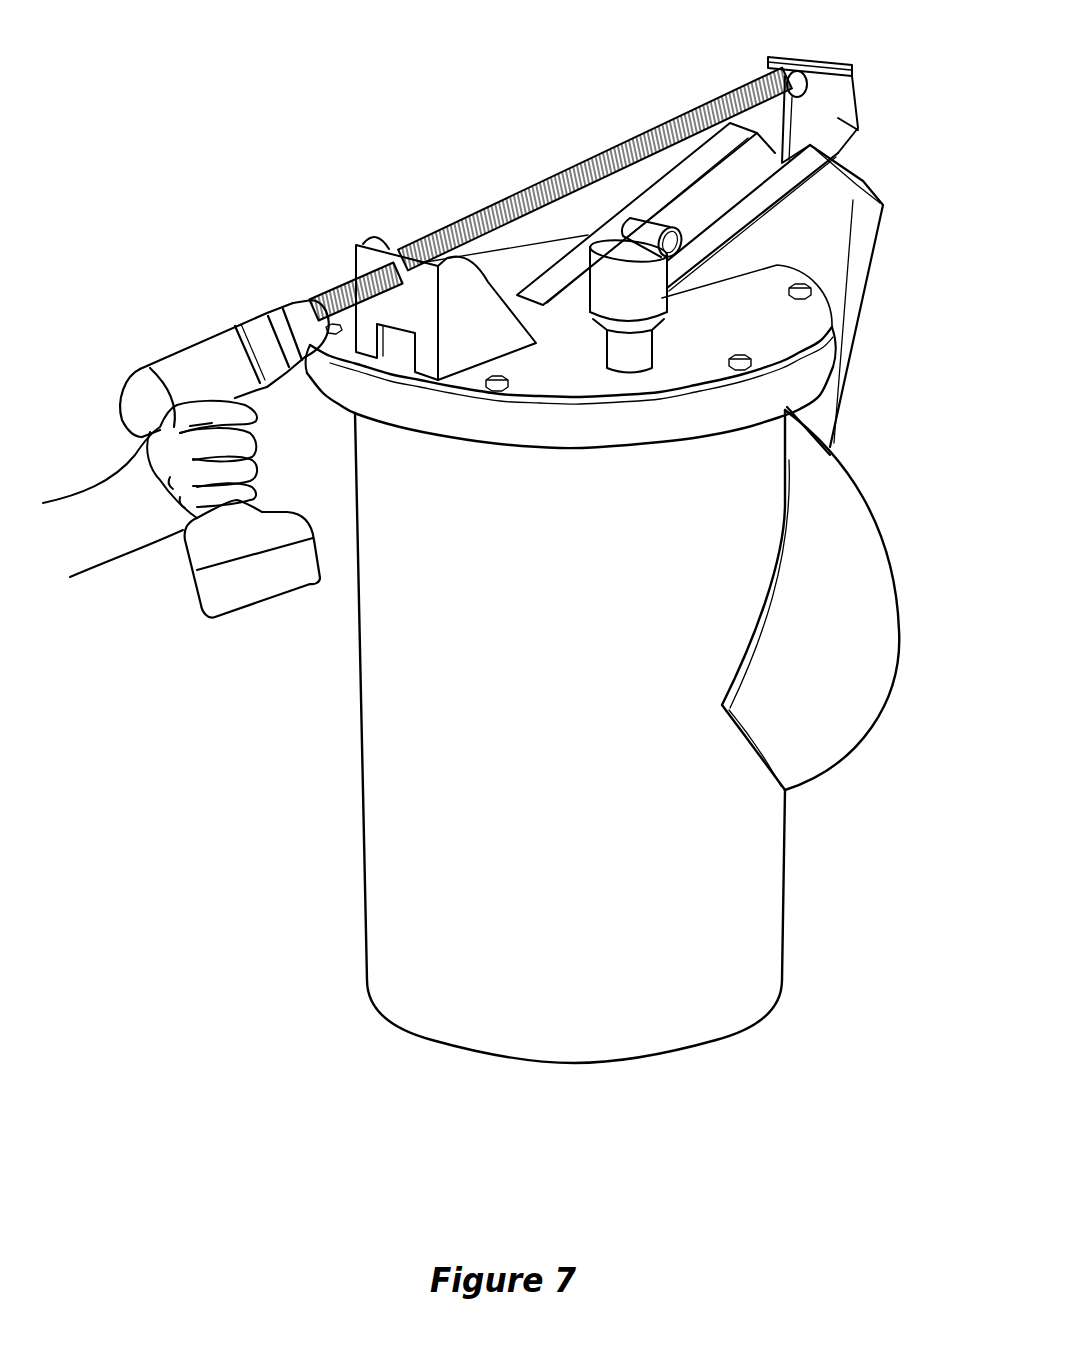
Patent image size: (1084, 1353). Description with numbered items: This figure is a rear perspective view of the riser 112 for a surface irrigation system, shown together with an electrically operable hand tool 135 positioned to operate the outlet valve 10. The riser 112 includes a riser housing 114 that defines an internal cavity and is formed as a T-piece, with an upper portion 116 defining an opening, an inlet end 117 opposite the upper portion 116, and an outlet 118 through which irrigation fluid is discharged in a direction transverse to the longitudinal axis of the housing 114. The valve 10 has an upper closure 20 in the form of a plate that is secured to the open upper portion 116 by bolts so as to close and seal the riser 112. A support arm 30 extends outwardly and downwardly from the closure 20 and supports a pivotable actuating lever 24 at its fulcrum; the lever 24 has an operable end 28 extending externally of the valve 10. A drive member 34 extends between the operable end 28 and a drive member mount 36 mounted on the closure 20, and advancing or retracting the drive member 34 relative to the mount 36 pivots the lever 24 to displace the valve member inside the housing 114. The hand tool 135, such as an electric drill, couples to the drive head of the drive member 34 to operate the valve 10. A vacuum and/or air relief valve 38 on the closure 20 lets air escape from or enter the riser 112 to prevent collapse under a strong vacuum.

The outlet valve 10 is at (372, 130).
The upper closure 20 is at (777, 328).
The actuating lever 24 is at (822, 108).
The operable end 28 is at (790, 68).
The support arm 30 is at (822, 208).
The drive member 34 is at (600, 165).
The drive member mount 36 is at (360, 244).
The vacuum and/or air relief valve 38 is at (593, 234).
The riser 112 is at (328, 632).
The riser housing 114 is at (412, 893).
The upper portion 116 is at (827, 357).
The inlet end 117 is at (569, 1078).
The outlet 118 is at (878, 500).
The electrically operable hand tool 135 is at (128, 360).